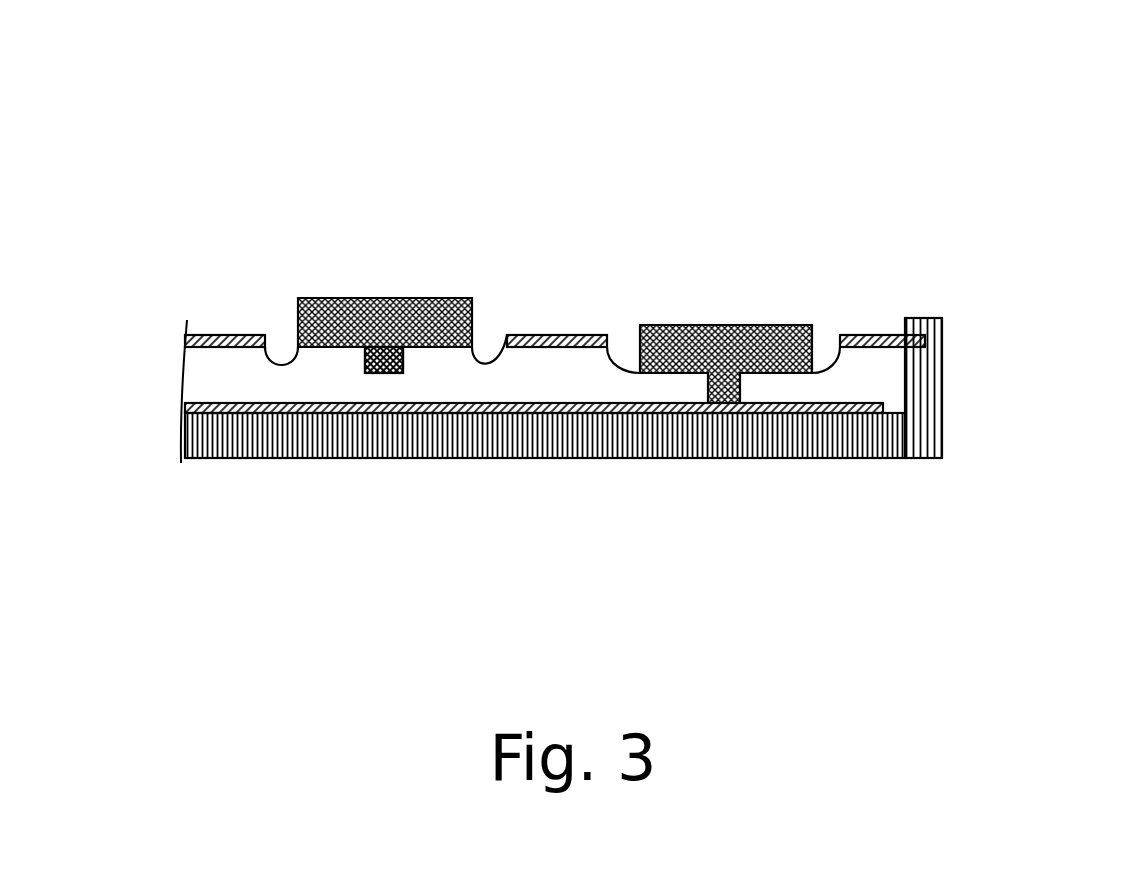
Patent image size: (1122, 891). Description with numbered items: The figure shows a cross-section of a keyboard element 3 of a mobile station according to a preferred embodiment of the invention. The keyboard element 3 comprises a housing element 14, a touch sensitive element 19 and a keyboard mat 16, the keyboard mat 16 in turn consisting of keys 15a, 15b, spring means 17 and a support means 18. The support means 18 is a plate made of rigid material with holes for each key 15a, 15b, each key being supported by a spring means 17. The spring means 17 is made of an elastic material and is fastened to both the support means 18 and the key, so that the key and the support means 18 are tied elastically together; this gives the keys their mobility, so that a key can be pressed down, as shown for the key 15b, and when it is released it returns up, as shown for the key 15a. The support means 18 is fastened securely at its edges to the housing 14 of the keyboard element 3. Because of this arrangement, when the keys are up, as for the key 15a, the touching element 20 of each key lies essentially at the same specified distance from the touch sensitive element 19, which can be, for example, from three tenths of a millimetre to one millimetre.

The keyboard element 3 is at (569, 232).
The housing element 14 is at (245, 441).
The key (up position) 15a is at (382, 298).
The key (pressed position) 15b is at (716, 325).
The keyboard mat 16 is at (187, 341).
The spring means 17 is at (489, 366).
The support means 18 is at (568, 348).
The touch sensitive element 19 is at (187, 405).
The touching element 20 is at (378, 374).